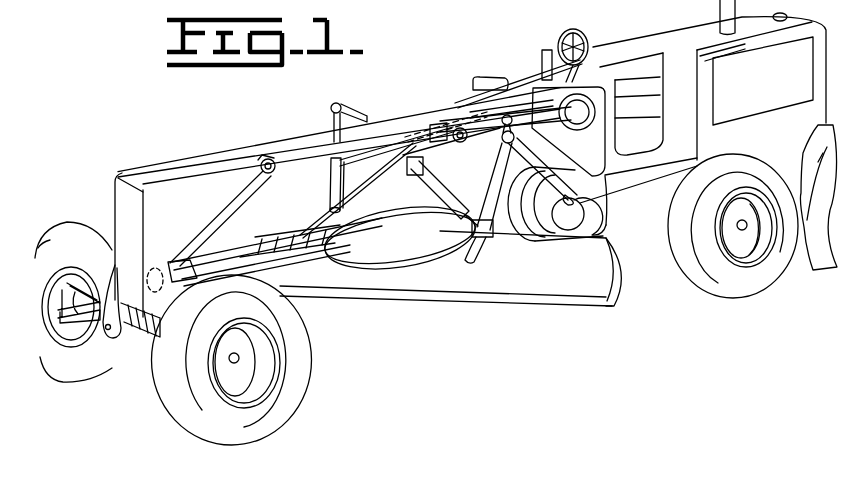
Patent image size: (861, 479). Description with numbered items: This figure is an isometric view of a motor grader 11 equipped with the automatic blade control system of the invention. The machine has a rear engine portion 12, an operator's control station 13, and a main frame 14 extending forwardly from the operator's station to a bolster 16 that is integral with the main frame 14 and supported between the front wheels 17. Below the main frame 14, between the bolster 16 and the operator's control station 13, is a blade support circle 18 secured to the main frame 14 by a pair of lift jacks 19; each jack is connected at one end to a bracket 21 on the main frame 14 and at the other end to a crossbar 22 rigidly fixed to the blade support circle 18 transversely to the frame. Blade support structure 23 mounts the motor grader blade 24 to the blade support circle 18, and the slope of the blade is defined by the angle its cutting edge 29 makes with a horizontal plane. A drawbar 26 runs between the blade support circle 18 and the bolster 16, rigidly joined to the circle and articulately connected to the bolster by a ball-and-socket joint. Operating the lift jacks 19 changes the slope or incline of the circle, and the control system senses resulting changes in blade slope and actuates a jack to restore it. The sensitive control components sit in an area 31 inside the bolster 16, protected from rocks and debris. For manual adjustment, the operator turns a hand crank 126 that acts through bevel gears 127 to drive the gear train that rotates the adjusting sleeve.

The motor grader 11 is at (452, 88).
The rear engine portion 12 is at (688, 26).
The operator's control station 13 is at (514, 60).
The main frame 14 is at (268, 140).
The bolster 16 is at (118, 200).
The front wheels 17 is at (153, 368).
The blade support circle 18 is at (416, 270).
The lift jacks 19 is at (334, 192).
The bracket 21 is at (357, 107).
The crossbar 22 is at (412, 212).
The blade support structure 23 is at (486, 254).
The motor grader blade 24 is at (557, 285).
The drawbar 26 is at (218, 258).
The cutting edge 29 is at (474, 302).
The area of control system 31 is at (160, 262).
The hand crank 126 is at (600, 73).
The bevel gears 127 is at (272, 172).